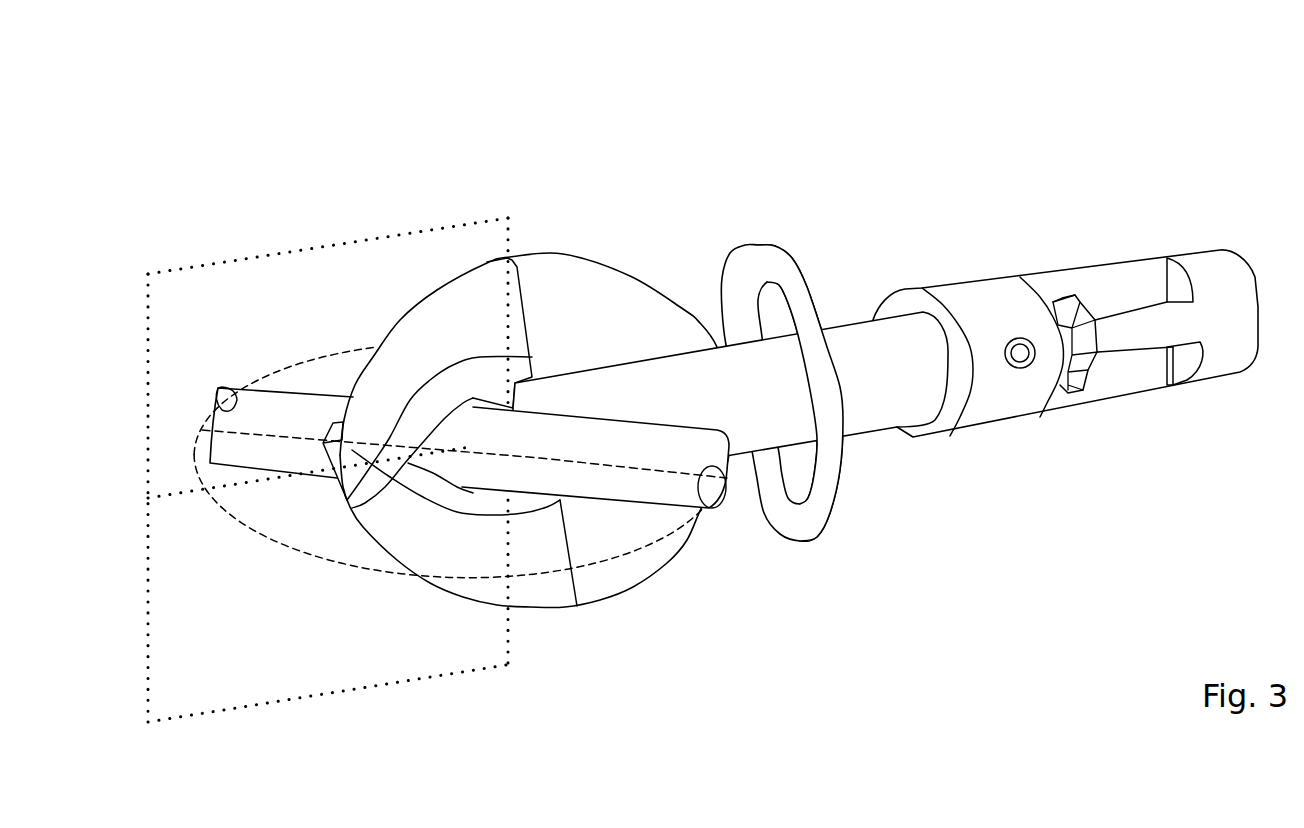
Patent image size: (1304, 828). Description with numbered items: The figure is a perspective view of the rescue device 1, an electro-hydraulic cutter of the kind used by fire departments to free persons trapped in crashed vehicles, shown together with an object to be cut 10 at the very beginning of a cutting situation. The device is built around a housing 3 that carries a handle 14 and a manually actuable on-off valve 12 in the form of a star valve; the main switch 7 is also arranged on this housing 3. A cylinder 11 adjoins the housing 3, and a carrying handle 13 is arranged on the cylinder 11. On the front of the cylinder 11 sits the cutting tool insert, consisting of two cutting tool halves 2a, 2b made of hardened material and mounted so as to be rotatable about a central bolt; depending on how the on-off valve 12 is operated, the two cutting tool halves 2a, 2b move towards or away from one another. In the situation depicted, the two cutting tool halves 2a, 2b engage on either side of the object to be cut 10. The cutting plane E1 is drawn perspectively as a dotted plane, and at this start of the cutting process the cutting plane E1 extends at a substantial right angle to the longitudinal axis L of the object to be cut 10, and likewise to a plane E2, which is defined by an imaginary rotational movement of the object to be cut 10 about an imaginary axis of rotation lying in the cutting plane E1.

The rescue device 1 is at (783, 50).
The cutting tool half 2a is at (432, 308).
The cutting tool half 2b is at (528, 592).
The housing 3 is at (983, 293).
The main switch 7 is at (1023, 360).
The object to be cut 10 is at (270, 400).
The cylinder 11 is at (868, 420).
The on-off valve 12 is at (1080, 310).
The carrying handle 13 is at (782, 392).
The handle 14 is at (1143, 337).
The cutting plane E1 is at (290, 256).
The plane E2 is at (643, 555).
The longitudinal axis L is at (662, 470).